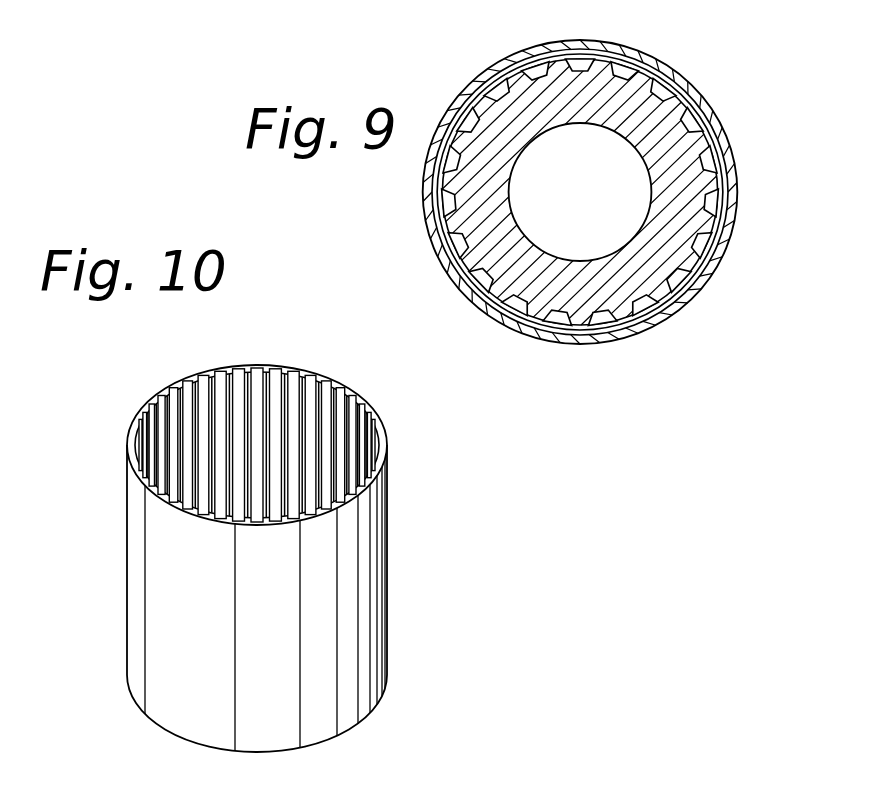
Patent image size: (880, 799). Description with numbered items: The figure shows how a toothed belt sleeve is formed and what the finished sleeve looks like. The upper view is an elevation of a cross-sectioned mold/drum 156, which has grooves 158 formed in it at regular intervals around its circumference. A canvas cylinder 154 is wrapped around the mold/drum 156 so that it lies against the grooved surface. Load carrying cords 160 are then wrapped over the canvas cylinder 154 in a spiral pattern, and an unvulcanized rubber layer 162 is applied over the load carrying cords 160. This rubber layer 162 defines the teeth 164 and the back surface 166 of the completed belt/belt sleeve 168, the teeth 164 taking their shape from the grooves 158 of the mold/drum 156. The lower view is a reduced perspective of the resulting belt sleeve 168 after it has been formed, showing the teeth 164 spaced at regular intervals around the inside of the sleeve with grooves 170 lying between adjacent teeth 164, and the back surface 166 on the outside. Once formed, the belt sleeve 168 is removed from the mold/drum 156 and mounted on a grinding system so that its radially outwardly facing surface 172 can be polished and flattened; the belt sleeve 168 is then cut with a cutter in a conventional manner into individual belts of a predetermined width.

In FIG. 9, the canvas cylinder 154 is at (663, 94).
In FIG. 9, the mold/drum 156 is at (650, 164).
In FIG. 9, the grooves 158 is at (700, 245).
In FIG. 9, the load carrying cords 160 is at (719, 156).
In FIG. 9, the unvulcanized rubber layer 162 is at (575, 40).
In FIG. 10, the teeth 164 is at (355, 401).
In FIG. 10, the back surface 166 is at (365, 636).
In FIG. 9, the belt/belt sleeve 168 is at (625, 42).
In FIG. 10, the belt/belt sleeve 168 is at (398, 514).
In FIG. 10, the grooves 170 is at (323, 377).
In FIG. 9, the radially outwardly facing surface 172 is at (684, 303).
In FIG. 10, the radially outwardly facing surface 172 is at (368, 684).